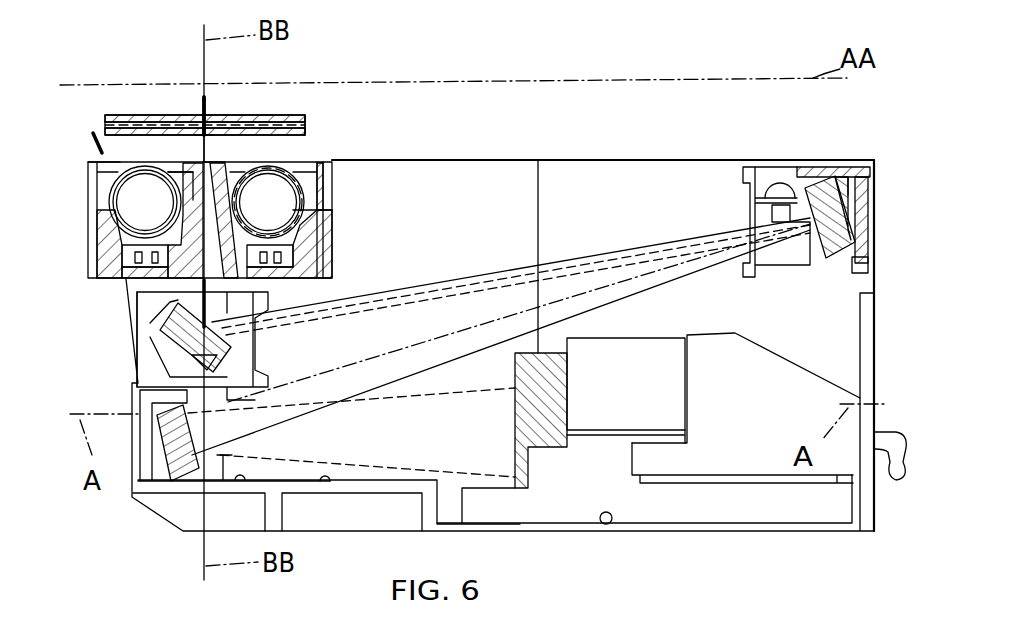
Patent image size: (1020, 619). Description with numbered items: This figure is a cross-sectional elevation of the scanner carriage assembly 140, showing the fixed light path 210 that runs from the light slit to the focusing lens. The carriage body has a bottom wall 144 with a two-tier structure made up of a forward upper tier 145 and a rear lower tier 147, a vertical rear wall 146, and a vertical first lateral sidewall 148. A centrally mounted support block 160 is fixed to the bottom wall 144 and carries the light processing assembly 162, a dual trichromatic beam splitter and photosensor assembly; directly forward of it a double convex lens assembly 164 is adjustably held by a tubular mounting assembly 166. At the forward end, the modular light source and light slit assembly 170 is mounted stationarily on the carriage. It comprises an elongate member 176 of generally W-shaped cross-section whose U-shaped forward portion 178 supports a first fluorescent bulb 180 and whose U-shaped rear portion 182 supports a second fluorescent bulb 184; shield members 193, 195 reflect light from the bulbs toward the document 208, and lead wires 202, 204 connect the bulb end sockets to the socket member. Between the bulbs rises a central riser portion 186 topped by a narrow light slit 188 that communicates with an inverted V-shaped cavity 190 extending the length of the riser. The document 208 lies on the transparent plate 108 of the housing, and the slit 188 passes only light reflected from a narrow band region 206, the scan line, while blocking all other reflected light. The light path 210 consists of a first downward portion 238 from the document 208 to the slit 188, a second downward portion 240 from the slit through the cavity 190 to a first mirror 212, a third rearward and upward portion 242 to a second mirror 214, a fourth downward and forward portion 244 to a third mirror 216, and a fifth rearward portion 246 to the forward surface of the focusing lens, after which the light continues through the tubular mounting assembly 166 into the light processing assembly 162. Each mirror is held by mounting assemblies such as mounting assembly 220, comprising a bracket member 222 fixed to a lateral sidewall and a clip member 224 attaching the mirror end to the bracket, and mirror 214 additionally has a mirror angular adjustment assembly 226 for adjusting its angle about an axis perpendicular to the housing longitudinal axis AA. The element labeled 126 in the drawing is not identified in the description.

The transparent plate 108 is at (303, 118).
The cable strain relief 126 is at (895, 481).
The scanner carriage assembly 140 is at (756, 116).
The bottom wall 144 is at (515, 524).
The forward upper tier 145 is at (322, 483).
The vertical rear wall 146 is at (860, 322).
The rear lower tier 147 is at (603, 524).
The vertical first lateral sidewall 148 is at (605, 180).
The support block 160 is at (705, 508).
The light processing assembly 162 is at (747, 362).
The double convex lens assembly 164 is at (542, 353).
The tubular mounting assembly 166 is at (655, 352).
The modular light source and light slit assembly 170 is at (95, 130).
The elongate member 176 is at (104, 250).
The forward portion 178 is at (108, 222).
The first fluorescent bulb 180 is at (112, 188).
The rear portion 182 is at (305, 249).
The second fluorescent bulb 184 is at (318, 192).
The central riser portion 186 is at (235, 168).
The light slit 188 is at (215, 135).
The inverted V-shaped cavity 190 is at (195, 190).
The shield member 193 is at (117, 173).
The shield member 195 is at (290, 183).
The lead wire 202 is at (135, 393).
The lead wire 204 is at (131, 386).
The narrow band region 206 is at (175, 133).
The document 208 is at (128, 115).
The light path 210 is at (208, 97).
The first mirror 212 is at (231, 347).
The second mirror 214 is at (805, 172).
The third mirror 216 is at (175, 481).
The mounting assembly 220 is at (763, 167).
The bracket member 222 is at (738, 160).
The clip member 224 is at (877, 167).
The mirror angular adjustment assembly 226 is at (755, 201).
The first light path portion 238 is at (225, 134).
The second light path portion 240 is at (220, 282).
The third light path portion 242 is at (490, 290).
The fourth light path portion 244 is at (396, 345).
The fifth light path portion 246 is at (388, 465).